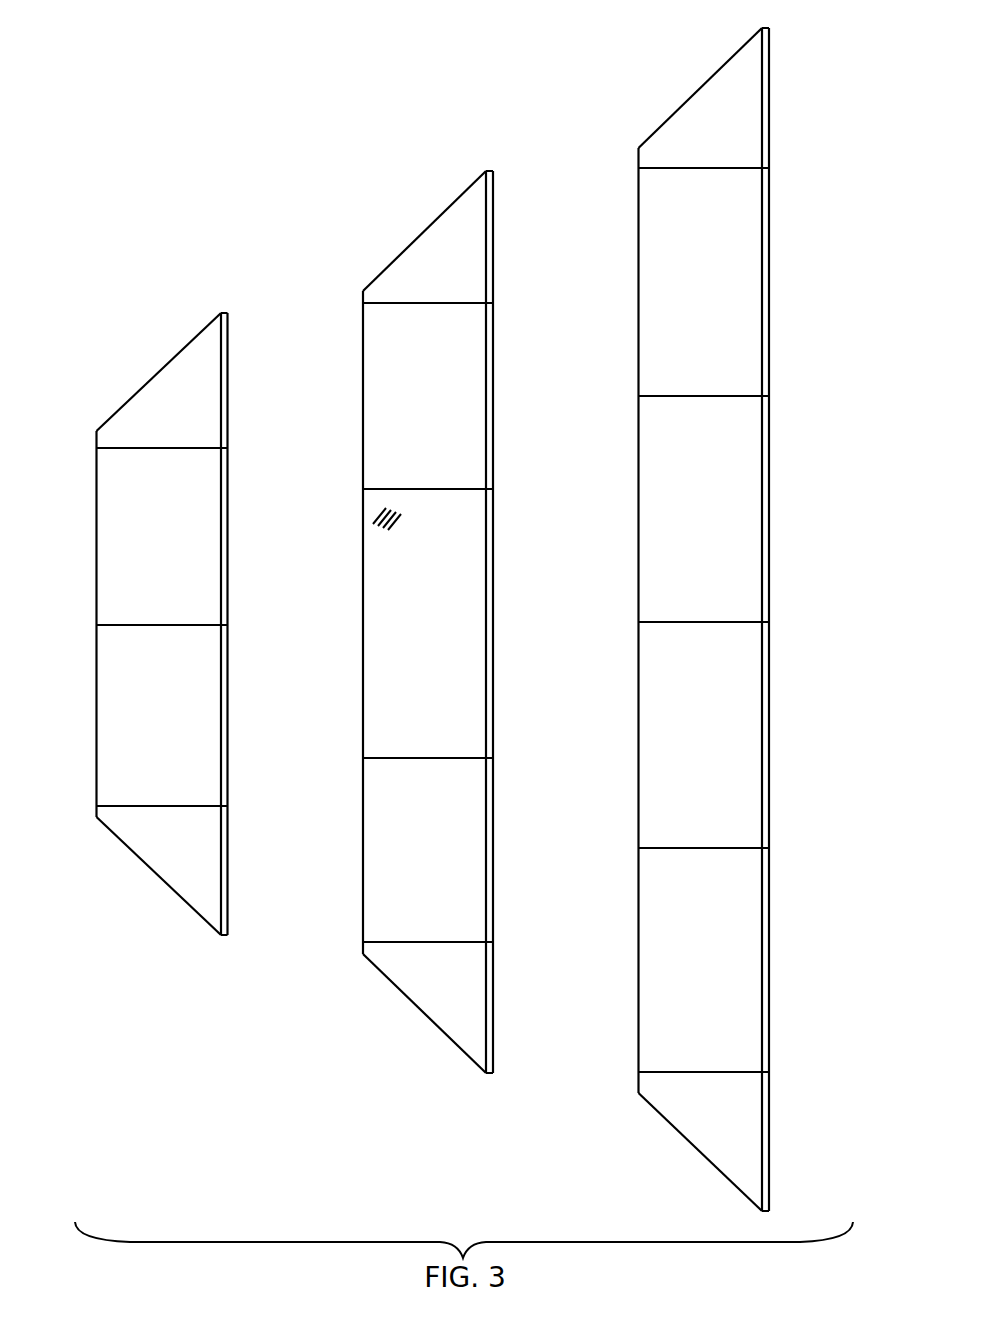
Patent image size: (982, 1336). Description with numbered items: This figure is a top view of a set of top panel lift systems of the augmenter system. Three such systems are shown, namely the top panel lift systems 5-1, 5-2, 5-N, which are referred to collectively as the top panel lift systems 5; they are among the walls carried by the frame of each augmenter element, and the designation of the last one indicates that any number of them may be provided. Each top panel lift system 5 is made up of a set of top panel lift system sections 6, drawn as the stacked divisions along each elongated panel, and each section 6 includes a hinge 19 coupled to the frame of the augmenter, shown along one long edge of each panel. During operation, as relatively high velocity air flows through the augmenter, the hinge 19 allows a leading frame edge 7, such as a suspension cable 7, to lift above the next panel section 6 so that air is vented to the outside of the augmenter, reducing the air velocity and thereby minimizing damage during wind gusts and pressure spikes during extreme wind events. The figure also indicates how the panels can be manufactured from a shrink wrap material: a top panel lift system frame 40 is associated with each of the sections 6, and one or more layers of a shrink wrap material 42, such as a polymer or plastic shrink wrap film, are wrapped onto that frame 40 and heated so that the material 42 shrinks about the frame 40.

The top panel lift systems 5 is at (377, 195).
The top panel lift system 5-1 is at (136, 338).
The top panel lift system 5-2 is at (434, 159).
The top panel lift system 5-N is at (685, 55).
The top panel lift system section 6 is at (204, 752).
The leading frame edge 7 is at (97, 526).
The hinge 19 is at (229, 369).
The top panel lift system frame 40 is at (459, 489).
The shrink wrap material 42 is at (375, 514).